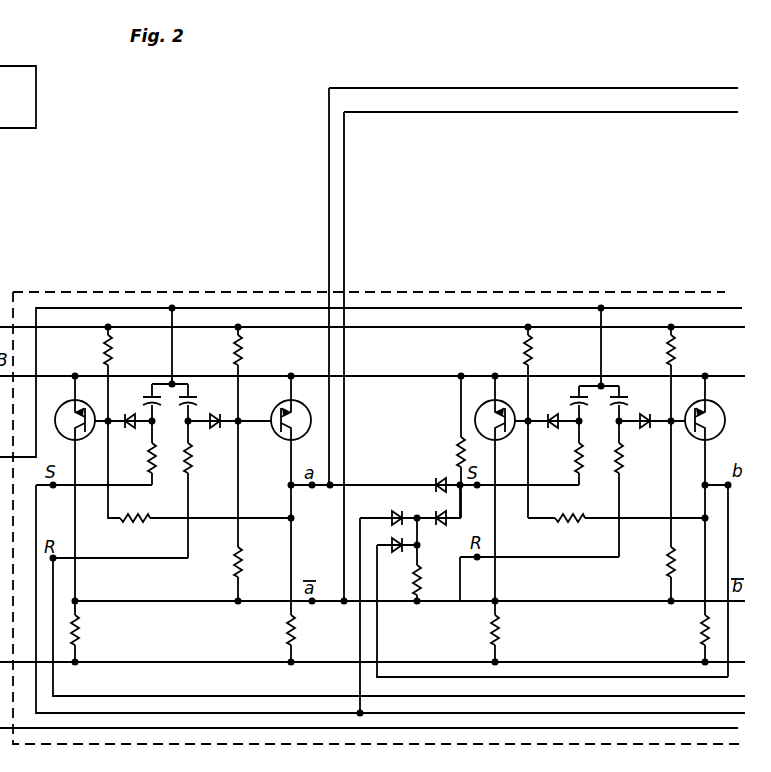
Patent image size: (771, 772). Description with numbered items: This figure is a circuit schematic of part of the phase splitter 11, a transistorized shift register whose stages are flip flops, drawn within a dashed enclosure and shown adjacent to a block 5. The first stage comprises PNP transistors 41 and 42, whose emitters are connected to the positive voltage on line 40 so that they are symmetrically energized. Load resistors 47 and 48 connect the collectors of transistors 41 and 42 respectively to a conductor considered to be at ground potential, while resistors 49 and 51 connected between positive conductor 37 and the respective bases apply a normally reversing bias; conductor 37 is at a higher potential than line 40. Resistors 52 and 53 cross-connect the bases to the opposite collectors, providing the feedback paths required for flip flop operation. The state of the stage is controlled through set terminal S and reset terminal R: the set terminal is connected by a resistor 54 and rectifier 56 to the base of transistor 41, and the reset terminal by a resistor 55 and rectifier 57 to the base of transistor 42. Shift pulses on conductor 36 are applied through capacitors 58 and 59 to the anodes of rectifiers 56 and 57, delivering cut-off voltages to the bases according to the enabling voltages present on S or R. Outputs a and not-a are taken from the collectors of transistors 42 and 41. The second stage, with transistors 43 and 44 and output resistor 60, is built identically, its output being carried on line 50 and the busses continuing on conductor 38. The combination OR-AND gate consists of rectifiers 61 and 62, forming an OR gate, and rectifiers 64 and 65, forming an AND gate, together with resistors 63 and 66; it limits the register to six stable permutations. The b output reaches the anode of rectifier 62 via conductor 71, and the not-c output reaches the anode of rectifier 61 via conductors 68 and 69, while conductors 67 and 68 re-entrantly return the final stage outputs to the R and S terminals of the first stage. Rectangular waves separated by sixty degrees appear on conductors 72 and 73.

The block 5 is at (18, 97).
The phase splitter 11 is at (112, 292).
The conductor 36 is at (66, 308).
The positive conductor 37 is at (710, 327).
The supply line 38 is at (690, 728).
The line 40 is at (722, 376).
The PNP transistor 41 is at (68, 406).
The PNP transistor 42 is at (298, 406).
The transistor 43 is at (488, 406).
The transistor 44 is at (714, 406).
The load resistor 47 is at (82, 620).
The load resistor 48 is at (286, 630).
The resistor 49 is at (112, 350).
The output line 50 is at (728, 485).
The resistor 51 is at (244, 348).
The resistor 52 is at (130, 514).
The resistor 53 is at (244, 560).
The resistor 54 is at (150, 448).
The resistor 55 is at (190, 456).
The rectifier 56 is at (125, 414).
The rectifier 57 is at (224, 414).
The capacitor 58 is at (146, 395).
The capacitor 59 is at (198, 395).
The resistor 60 is at (716, 612).
The rectifier 61 is at (390, 514).
The rectifier 62 is at (402, 550).
The resistor 63 is at (420, 578).
The rectifier 64 is at (434, 482).
The rectifier 65 is at (436, 512).
The resistor 66 is at (458, 444).
The conductor 67 is at (700, 696).
The conductor 68 is at (688, 713).
The conductor 69 is at (360, 678).
The conductor 71 is at (398, 677).
The conductor 72 is at (329, 214).
The conductor 73 is at (344, 220).